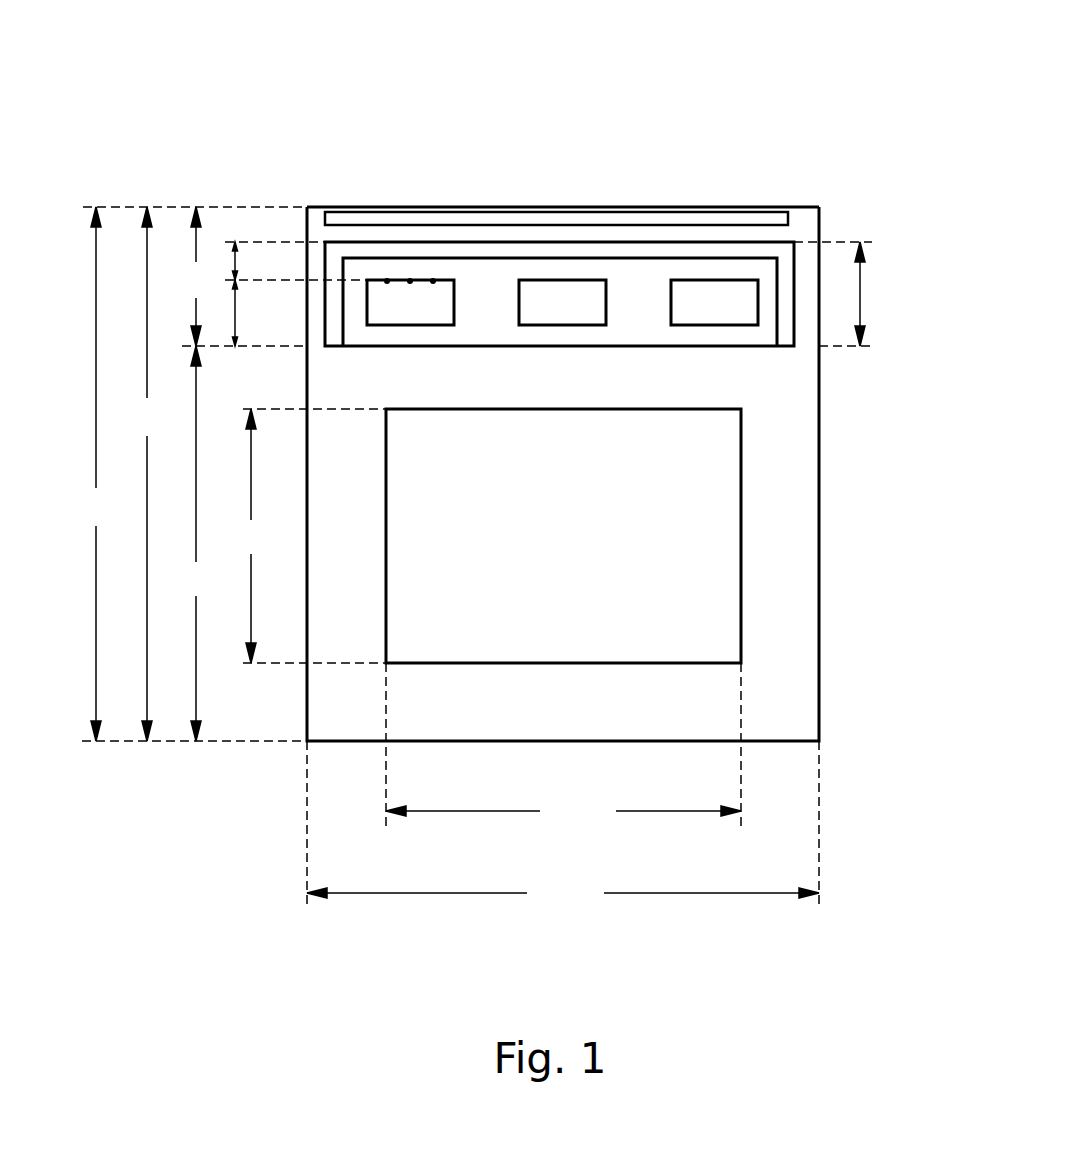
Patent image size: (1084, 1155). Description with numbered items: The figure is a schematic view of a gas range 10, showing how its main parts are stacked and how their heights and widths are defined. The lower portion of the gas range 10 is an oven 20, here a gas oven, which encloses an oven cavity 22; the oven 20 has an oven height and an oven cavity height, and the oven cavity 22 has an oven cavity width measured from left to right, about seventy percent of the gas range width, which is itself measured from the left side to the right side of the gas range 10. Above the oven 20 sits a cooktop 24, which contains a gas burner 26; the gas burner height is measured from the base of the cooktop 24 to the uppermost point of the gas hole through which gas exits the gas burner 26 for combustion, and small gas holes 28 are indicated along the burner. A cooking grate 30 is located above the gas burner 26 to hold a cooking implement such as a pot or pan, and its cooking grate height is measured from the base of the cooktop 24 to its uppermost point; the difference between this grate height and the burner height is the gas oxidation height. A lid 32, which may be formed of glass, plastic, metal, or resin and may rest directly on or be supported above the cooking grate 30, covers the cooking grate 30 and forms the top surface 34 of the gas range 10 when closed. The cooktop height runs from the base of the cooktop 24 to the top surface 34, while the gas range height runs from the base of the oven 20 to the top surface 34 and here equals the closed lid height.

The gas range 10 is at (852, 108).
The oven 20 is at (819, 557).
The oven cavity 22 is at (742, 458).
The cooktop 24 is at (818, 218).
The gas burner 26 is at (561, 280).
The grommets 28 is at (387, 280).
The cooking grate 30 is at (622, 246).
The lid 32 is at (382, 218).
The top surface 34 is at (803, 207).